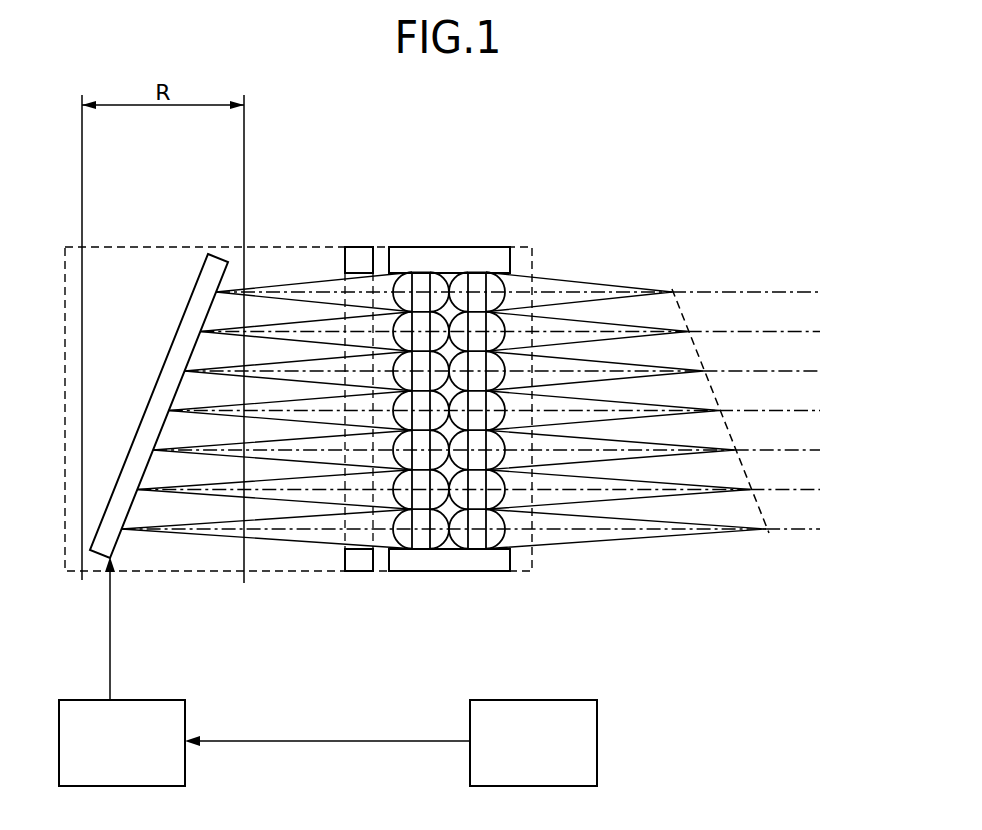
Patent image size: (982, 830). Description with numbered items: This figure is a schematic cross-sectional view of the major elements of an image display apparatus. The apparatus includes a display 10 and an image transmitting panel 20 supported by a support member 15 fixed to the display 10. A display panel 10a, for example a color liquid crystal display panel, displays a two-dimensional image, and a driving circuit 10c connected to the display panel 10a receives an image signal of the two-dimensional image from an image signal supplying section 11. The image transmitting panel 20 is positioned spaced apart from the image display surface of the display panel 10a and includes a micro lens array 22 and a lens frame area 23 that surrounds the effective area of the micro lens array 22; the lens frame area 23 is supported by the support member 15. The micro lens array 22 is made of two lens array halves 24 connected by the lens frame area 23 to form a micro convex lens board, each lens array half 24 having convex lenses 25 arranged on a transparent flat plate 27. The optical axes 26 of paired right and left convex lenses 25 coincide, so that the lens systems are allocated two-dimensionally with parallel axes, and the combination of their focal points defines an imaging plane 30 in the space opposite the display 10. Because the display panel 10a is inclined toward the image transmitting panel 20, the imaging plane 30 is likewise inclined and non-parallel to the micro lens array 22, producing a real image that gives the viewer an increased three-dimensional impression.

The display 10 is at (118, 246).
The display panel 10a is at (197, 283).
The driving circuit 10c is at (186, 767).
The image signal supplying section 11 is at (598, 741).
The support member 15 is at (357, 258).
The image transmitting panel 20 is at (475, 353).
The micro lens array 22 is at (456, 353).
The lens frame area 23 is at (400, 258).
The lens array half 24 is at (466, 341).
The convex lens 25 is at (496, 288).
The optical axis 26 is at (802, 373).
The transparent flat plate 27 is at (475, 548).
The imaging plane 30 is at (681, 313).